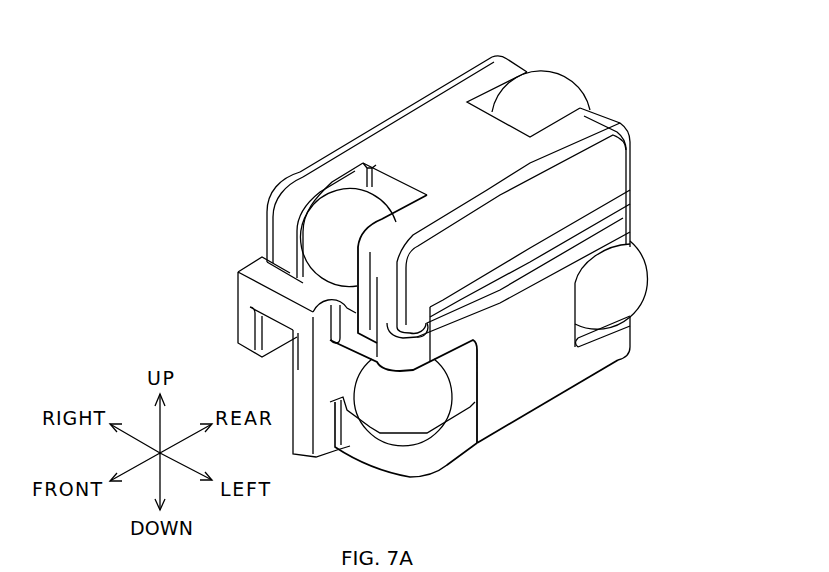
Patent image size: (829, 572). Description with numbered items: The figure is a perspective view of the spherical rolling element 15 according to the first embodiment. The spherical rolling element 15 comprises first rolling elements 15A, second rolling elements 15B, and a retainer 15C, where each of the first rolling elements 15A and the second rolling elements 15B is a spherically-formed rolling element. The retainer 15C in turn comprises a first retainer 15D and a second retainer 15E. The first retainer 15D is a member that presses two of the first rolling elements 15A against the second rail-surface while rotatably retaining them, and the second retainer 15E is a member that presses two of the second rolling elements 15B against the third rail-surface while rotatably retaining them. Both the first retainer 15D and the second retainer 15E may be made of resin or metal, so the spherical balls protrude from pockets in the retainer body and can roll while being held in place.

The spherical rolling element 15 is at (334, 113).
The first rolling elements 15A is at (320, 218).
The second rolling elements 15B is at (637, 297).
The retainer 15C is at (616, 165).
The first retainer 15D is at (430, 107).
The second retainer 15E is at (531, 389).